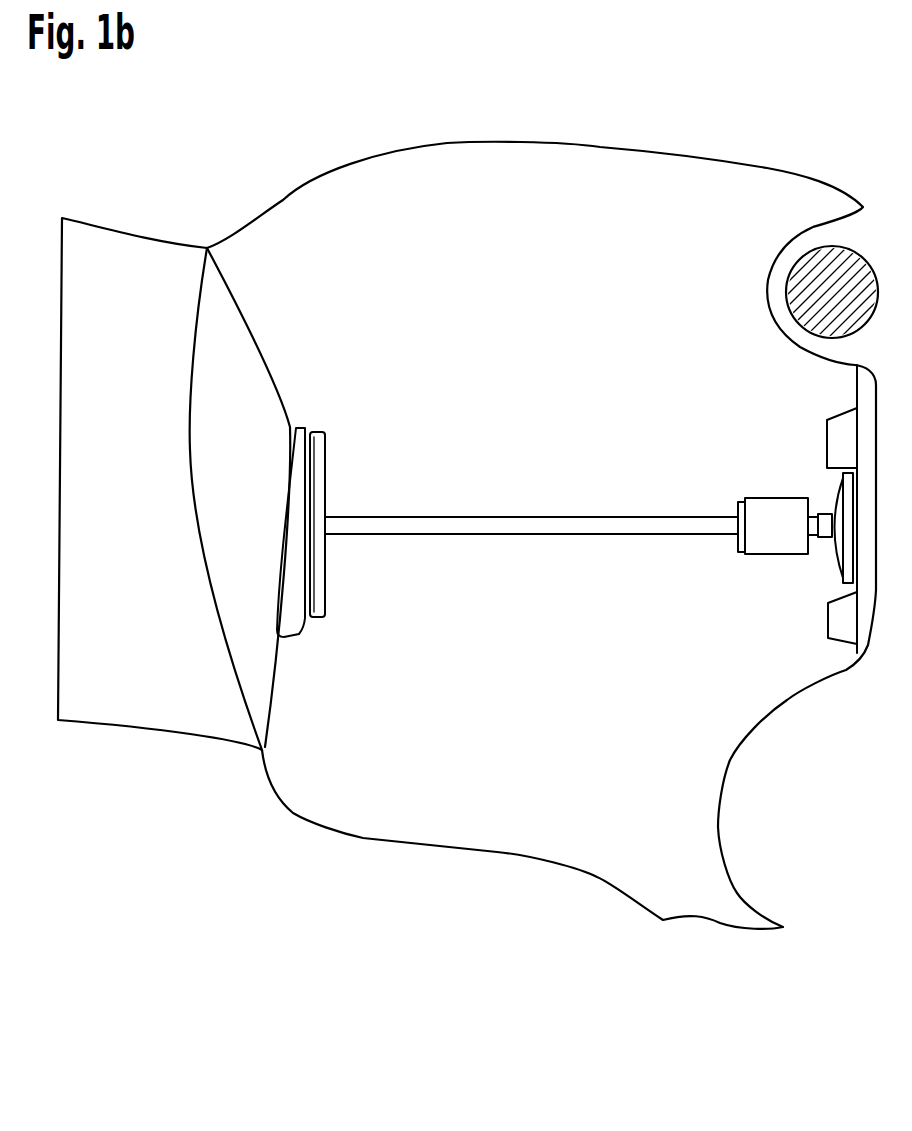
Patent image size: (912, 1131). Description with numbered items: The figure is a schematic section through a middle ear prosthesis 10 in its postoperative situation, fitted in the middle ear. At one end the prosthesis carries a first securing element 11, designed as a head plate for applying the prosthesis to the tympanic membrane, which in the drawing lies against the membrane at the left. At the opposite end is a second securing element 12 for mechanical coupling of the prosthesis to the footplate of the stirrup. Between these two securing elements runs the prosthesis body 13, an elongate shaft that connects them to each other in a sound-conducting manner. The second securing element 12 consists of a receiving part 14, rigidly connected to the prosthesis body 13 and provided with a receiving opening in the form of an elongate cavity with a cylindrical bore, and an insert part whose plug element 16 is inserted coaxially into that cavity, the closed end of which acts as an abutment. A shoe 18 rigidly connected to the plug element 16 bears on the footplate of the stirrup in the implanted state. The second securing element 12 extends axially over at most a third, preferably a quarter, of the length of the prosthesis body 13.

The middle ear prosthesis 10 is at (528, 340).
The first securing element 11 is at (322, 444).
The second securing element 12 is at (749, 511).
The prosthesis body 13 is at (448, 525).
The receiving part 14 is at (762, 543).
The plug element 16 is at (817, 545).
The shoe 18 is at (842, 565).